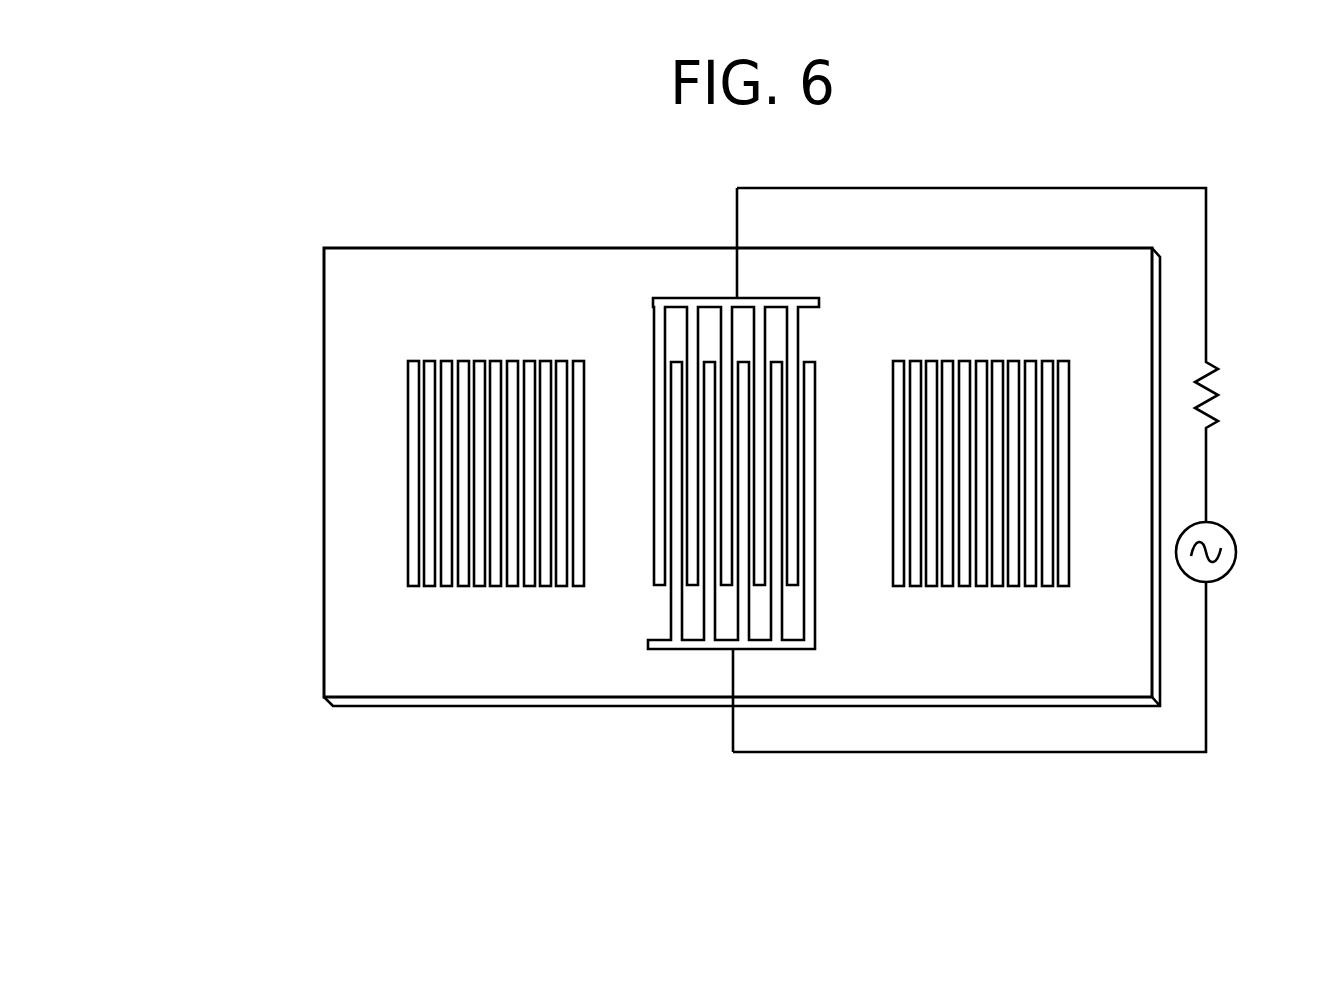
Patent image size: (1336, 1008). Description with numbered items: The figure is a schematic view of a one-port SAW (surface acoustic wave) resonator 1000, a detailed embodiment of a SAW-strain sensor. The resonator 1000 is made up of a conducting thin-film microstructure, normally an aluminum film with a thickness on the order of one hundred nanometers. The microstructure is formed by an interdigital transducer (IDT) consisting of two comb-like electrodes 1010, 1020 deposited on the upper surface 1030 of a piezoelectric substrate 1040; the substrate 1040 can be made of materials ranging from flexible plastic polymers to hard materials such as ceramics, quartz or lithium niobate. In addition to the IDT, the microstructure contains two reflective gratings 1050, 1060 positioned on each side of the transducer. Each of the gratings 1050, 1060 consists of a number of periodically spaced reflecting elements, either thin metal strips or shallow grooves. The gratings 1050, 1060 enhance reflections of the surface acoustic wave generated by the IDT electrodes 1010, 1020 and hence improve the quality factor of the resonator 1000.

The resonator 1000 is at (366, 173).
The comb-like electrode 1010 is at (675, 290).
The comb-like electrode 1020 is at (703, 667).
The upper surface 1030 is at (344, 464).
The piezoelectric substrate 1040 is at (330, 715).
The reflective grating 1050 is at (489, 605).
The reflective grating 1060 is at (959, 607).